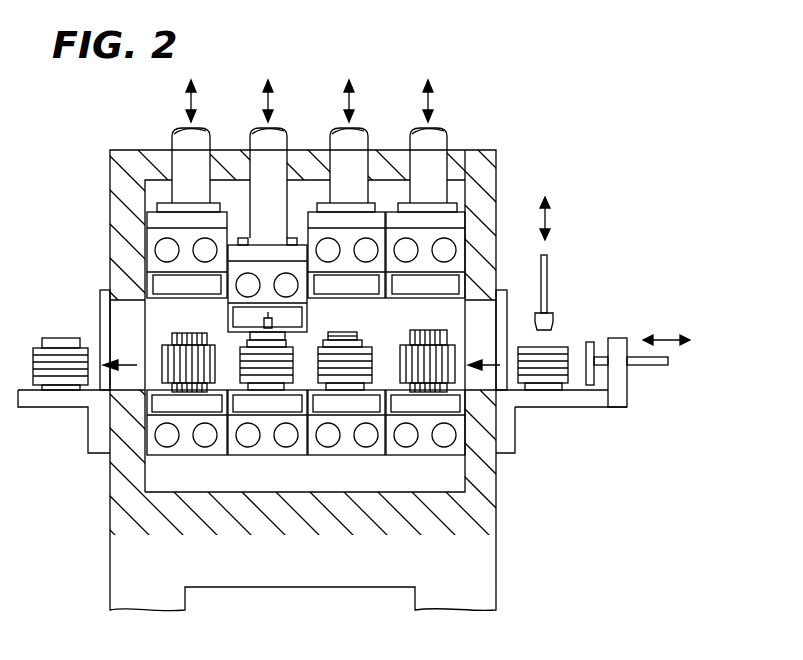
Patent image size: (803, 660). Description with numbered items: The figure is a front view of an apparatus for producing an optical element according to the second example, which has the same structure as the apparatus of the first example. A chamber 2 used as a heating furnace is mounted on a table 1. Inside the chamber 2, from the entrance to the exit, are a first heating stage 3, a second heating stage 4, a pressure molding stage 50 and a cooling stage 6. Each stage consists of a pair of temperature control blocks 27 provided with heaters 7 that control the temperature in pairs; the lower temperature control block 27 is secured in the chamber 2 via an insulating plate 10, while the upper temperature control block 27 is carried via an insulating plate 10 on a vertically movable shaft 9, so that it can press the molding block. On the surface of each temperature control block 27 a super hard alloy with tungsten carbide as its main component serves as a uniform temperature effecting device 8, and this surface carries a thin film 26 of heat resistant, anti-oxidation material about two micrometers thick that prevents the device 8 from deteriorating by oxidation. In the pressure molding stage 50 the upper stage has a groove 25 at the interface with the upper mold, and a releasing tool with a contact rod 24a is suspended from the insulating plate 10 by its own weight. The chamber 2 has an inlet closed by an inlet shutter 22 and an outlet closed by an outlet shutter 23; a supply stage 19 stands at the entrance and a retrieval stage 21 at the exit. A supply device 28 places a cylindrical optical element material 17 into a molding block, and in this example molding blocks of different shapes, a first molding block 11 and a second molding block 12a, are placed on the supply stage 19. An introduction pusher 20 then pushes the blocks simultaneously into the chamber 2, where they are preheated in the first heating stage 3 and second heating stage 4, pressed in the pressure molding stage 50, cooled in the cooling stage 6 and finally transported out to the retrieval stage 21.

The table 1 is at (483, 577).
The chamber 2 is at (492, 170).
The first heating stage 3 is at (457, 207).
The second heating stage 4 is at (383, 207).
The cooling stage 6 is at (225, 210).
The heaters 7 is at (208, 248).
The uniform temperature effecting device 8 is at (418, 288).
The vertically movable shaft 9 is at (182, 142).
The insulating plate 10 is at (162, 180).
The molding block 11 is at (568, 378).
The second molding block 12a is at (470, 412).
The optical element material 17 is at (555, 318).
The supply stage 19 is at (548, 398).
The introduction pusher 20 is at (650, 364).
The retrieval stage 21 is at (52, 400).
The inlet shutter 22 is at (501, 290).
The outlet shutter 23 is at (100, 296).
The contact rod 24a is at (262, 322).
The groove 25 is at (274, 323).
The thin film 26 is at (183, 290).
The temperature control block 27 is at (457, 237).
The supply device 28 is at (548, 275).
The pressure molding stage 50 is at (292, 243).